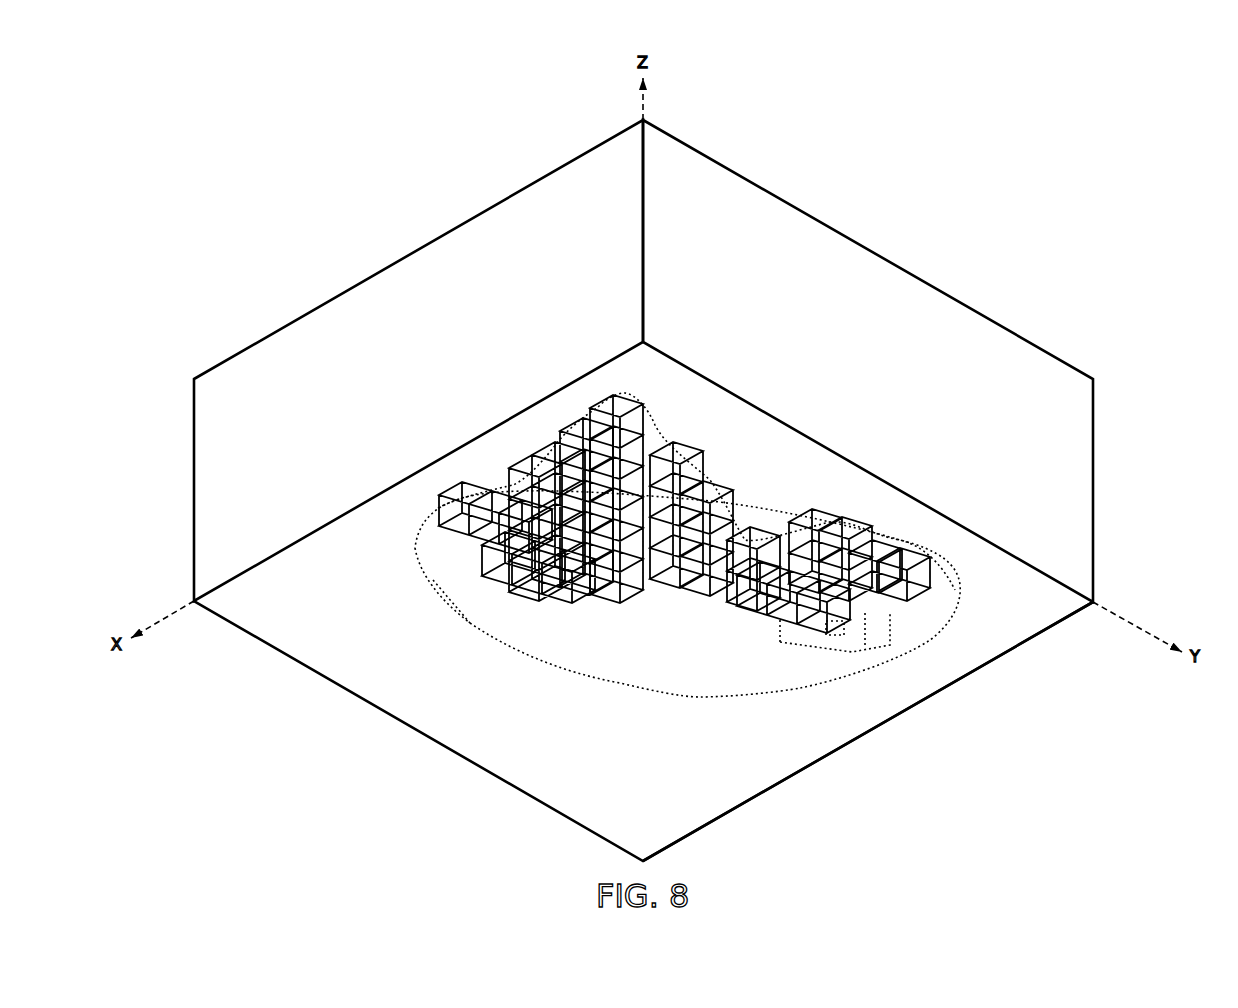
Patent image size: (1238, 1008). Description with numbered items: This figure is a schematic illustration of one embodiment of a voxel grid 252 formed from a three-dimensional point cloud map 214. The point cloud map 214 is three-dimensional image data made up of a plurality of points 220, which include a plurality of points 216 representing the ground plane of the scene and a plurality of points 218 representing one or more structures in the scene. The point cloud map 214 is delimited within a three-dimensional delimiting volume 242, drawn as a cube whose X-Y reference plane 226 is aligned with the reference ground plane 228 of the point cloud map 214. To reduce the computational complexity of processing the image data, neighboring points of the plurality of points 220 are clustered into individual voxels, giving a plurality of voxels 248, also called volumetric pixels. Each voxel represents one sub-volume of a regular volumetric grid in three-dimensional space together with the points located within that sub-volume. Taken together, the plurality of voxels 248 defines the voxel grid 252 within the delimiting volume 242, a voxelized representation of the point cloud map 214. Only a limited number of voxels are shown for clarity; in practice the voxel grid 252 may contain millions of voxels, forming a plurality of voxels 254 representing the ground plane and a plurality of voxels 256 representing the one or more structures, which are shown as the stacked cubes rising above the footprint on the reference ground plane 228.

The three-dimensional delimiting volume 242 is at (903, 222).
The plurality of points representing one or more structures 218 is at (675, 380).
The voxel grid 252 is at (478, 407).
The plurality of voxels representing one or more structures 256 is at (733, 463).
The plurality of voxels representing the ground plane 254 is at (937, 548).
The plurality of points representing the ground plane 216 is at (402, 586).
The plurality of points 220 is at (472, 629).
The 3D point cloud map 214 is at (535, 668).
The plurality of voxels 248 is at (645, 705).
The reference ground plane 228 is at (758, 698).
The reference plane 226 is at (805, 770).